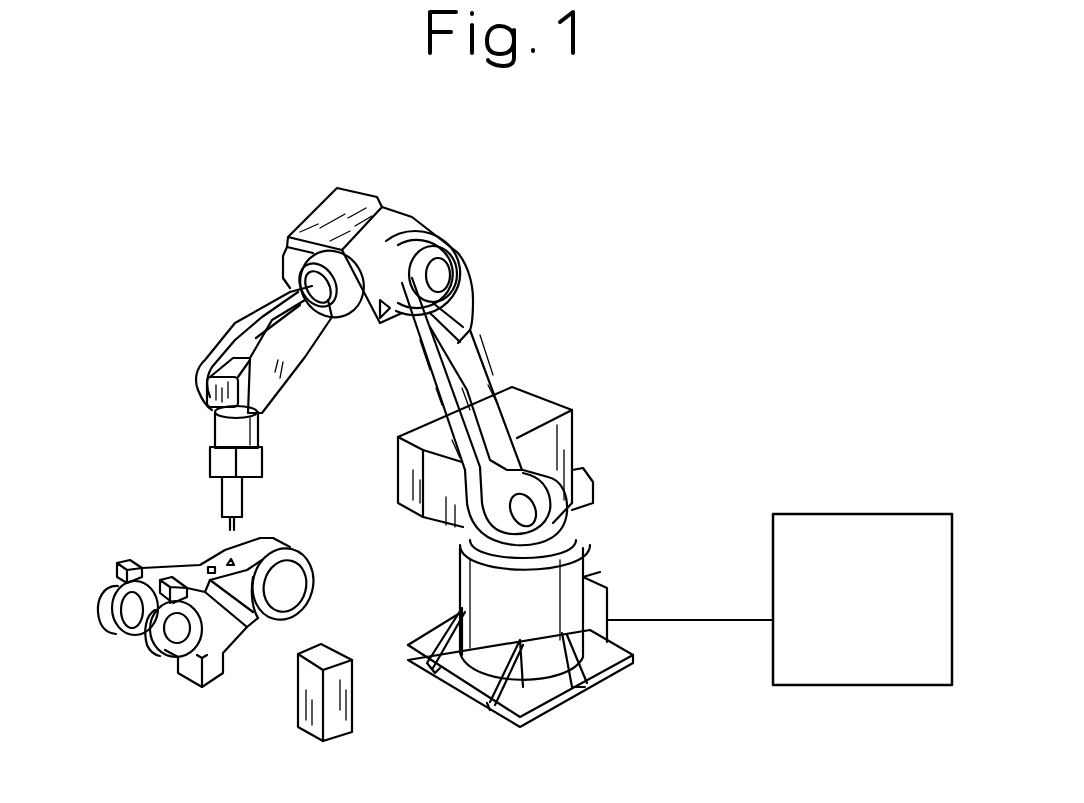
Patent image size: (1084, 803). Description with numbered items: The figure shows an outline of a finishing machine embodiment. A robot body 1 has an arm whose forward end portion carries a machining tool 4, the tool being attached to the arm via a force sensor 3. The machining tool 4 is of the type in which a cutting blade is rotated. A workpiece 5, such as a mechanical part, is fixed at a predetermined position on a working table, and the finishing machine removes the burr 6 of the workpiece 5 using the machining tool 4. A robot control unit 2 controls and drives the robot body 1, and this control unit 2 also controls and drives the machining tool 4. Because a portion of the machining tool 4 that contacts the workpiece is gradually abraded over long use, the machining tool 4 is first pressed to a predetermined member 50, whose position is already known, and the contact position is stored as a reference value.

The robot body 1 is at (578, 273).
The robot control unit 2 is at (871, 514).
The force sensor 3 is at (224, 437).
The machining tool 4 is at (222, 462).
The workpiece 5 is at (104, 601).
The burr 6 is at (203, 563).
The predetermined member 50 is at (345, 717).